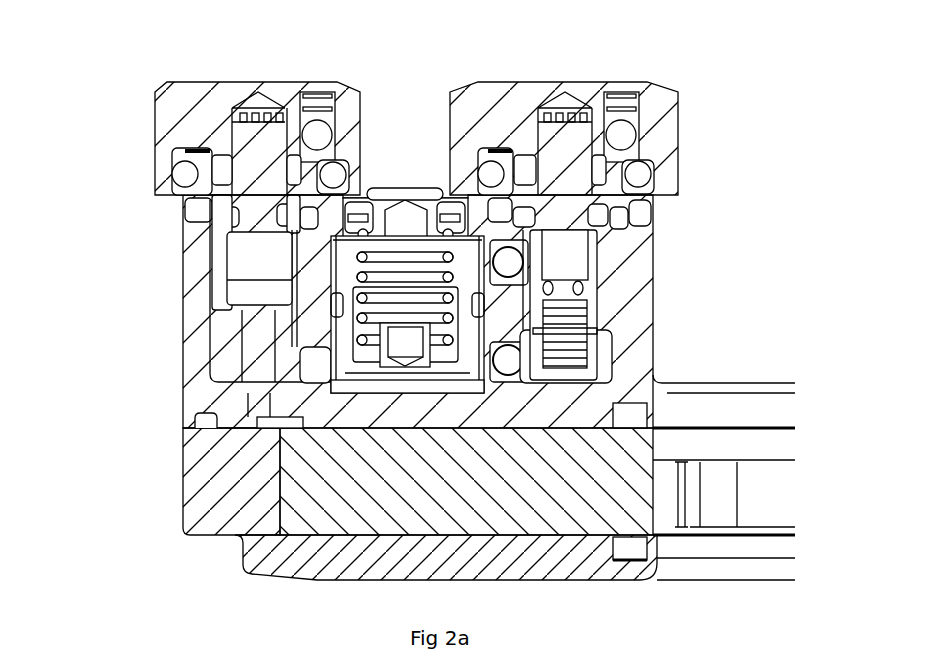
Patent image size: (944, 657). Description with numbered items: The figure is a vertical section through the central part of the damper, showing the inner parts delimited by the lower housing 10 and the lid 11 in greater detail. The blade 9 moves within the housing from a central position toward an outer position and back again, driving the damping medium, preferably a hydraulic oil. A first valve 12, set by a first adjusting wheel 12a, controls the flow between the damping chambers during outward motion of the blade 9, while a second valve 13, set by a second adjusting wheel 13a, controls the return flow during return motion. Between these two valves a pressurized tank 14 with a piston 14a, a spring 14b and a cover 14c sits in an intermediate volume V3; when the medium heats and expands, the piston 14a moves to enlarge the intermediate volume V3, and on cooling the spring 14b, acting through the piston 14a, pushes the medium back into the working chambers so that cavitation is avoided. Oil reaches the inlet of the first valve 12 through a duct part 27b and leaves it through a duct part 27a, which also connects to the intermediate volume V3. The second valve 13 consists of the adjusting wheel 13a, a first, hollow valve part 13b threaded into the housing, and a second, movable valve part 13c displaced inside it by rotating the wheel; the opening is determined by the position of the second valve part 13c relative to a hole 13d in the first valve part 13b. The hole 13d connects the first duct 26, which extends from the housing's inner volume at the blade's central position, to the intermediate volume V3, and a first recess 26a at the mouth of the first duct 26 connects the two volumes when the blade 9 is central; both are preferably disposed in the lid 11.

The blade 9 is at (635, 578).
The lower housing 10 is at (312, 572).
The lid 11 is at (187, 288).
The first valve 12 is at (611, 127).
The first adjusting wheel 12a is at (662, 97).
The second valve 13 is at (212, 137).
The second adjusting wheel 13a is at (180, 95).
The first, hollow valve part 13b is at (213, 193).
The second, movable valve part 13c is at (245, 232).
The hole 13d is at (290, 260).
The pressurized tank 14 is at (275, 242).
The piston 14a is at (330, 332).
The spring 14b is at (350, 310).
The cover 14c is at (407, 197).
The first duct 26 is at (260, 403).
The first recess 26a is at (283, 420).
The second part of third duct 27a is at (508, 360).
The second part of second duct 27b is at (508, 262).
The intermediate volume V3 is at (280, 480).